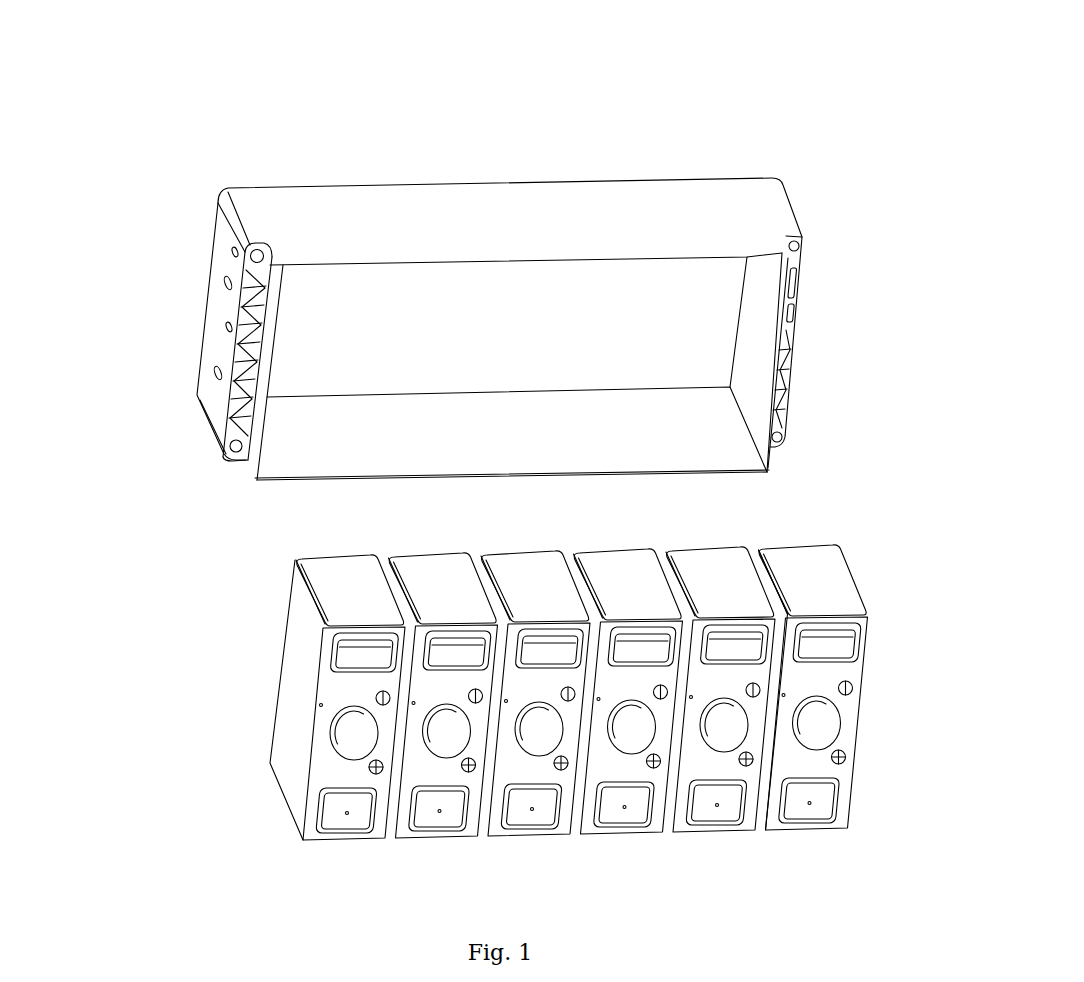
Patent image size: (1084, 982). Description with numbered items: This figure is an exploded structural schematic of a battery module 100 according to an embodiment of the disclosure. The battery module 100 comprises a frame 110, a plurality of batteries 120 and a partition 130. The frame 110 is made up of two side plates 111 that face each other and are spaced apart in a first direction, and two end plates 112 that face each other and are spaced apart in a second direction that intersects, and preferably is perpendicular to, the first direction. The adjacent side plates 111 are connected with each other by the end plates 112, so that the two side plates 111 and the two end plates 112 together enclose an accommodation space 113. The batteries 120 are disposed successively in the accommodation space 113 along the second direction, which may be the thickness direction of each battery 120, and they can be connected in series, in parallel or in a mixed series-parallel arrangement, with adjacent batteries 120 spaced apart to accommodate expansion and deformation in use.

The battery module 100 is at (535, 40).
The frame 110 is at (723, 166).
The side plates 111 is at (510, 217).
The end plates 112 is at (217, 330).
The accommodation space 113 is at (698, 308).
The batteries 120 is at (579, 900).
The partition 130 is at (768, 592).